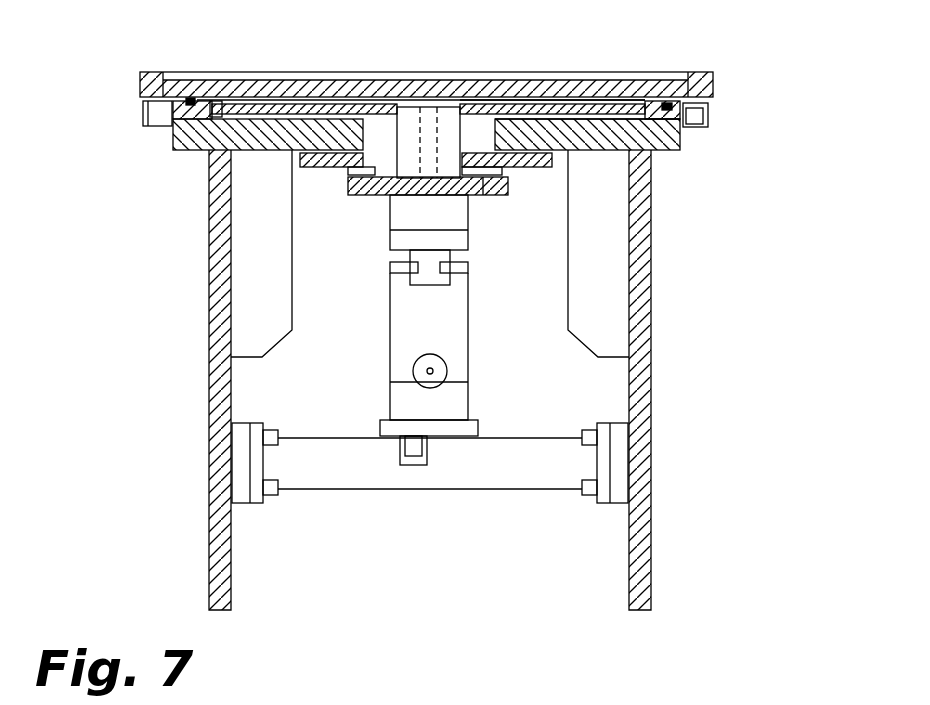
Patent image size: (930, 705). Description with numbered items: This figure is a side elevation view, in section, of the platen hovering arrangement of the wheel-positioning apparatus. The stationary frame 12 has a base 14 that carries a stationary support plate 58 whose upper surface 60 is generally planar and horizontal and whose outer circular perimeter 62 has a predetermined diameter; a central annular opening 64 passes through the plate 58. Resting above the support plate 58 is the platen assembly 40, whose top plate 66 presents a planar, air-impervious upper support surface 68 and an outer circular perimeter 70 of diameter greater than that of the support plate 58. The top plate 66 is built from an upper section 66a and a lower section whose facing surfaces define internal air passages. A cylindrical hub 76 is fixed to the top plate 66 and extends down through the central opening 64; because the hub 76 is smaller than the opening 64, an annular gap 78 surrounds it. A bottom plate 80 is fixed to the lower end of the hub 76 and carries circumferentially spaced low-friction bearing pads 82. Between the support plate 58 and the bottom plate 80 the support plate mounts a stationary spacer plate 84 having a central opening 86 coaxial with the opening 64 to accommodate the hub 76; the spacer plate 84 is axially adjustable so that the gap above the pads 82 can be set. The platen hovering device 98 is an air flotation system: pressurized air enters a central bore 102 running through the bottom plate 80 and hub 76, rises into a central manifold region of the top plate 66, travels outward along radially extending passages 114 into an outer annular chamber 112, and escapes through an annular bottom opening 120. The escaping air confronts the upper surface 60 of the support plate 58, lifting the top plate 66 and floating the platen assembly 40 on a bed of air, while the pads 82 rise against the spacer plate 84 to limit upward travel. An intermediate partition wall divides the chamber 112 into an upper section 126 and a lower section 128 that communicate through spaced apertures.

The stationary frame 12 is at (659, 433).
The base 14 is at (652, 228).
The platen assembly 40 is at (705, 52).
The stationary support plate 58 is at (195, 143).
The upper surface 60 is at (708, 115).
The outer circular perimeter 62 is at (683, 140).
The central annular opening 64 is at (510, 170).
The top plate 66 is at (721, 73).
The upper section 66a is at (648, 84).
The upper support surface 68 is at (262, 78).
The outer circular perimeter 70 is at (140, 86).
The cylindrical hub 76 is at (481, 130).
The annular gap 78 is at (486, 125).
The bottom plate 80 is at (373, 187).
The bearing pads 82 is at (350, 171).
The stationary spacer plate 84 is at (300, 160).
The central opening 86 is at (495, 196).
The platen hovering device 98 is at (432, 287).
The central bore 102 is at (431, 105).
The outer annular chamber 112 is at (221, 98).
The radially extending passages 114 is at (305, 104).
The annular bottom opening 120 is at (212, 120).
The upper section 126 is at (660, 106).
The lower section 128 is at (594, 121).